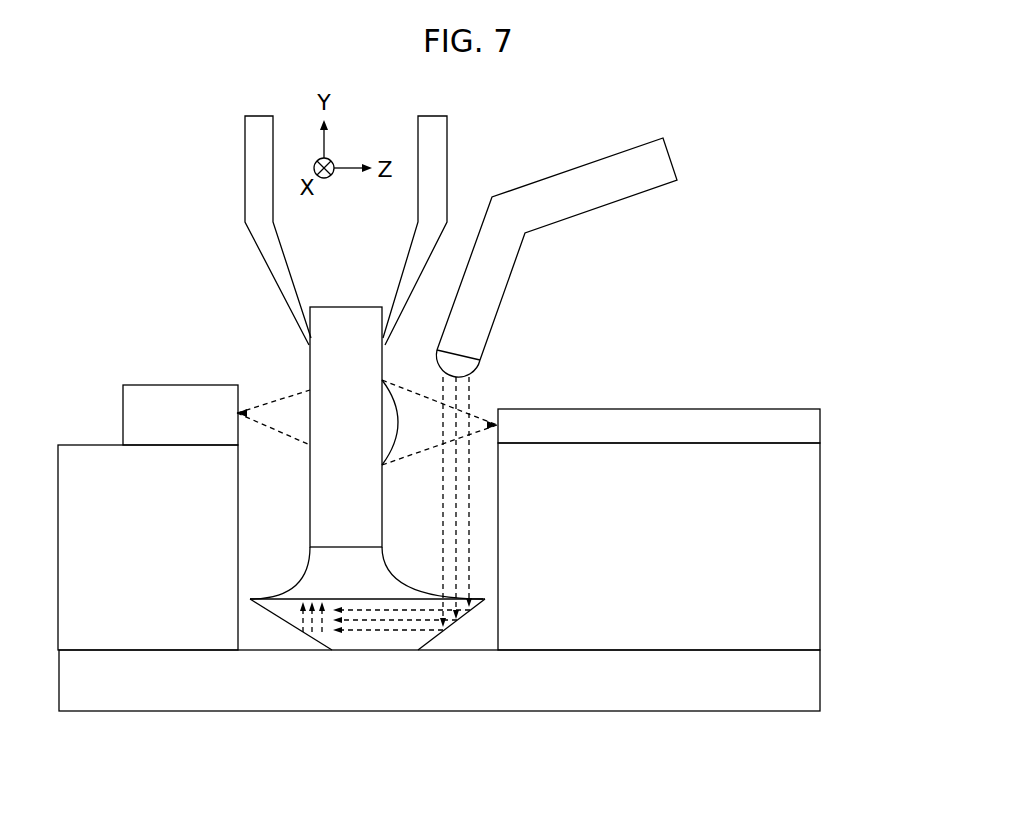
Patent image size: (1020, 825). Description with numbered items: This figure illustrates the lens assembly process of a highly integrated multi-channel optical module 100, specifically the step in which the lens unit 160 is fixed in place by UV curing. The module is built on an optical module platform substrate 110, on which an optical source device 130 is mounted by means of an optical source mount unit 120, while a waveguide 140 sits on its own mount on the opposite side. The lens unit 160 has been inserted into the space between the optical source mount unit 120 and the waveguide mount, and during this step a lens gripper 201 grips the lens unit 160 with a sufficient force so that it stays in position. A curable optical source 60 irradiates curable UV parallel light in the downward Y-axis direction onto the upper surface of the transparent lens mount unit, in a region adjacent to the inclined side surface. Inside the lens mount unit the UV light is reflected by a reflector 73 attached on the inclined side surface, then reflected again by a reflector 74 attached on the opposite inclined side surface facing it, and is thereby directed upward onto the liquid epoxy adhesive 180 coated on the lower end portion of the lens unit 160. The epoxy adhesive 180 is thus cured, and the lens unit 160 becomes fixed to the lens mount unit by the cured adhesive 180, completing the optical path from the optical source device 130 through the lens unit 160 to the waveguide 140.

The curable optical source 60 is at (620, 202).
The optical module 100 is at (135, 230).
The lens gripper 201 is at (243, 152).
The lens unit 160 is at (345, 307).
The adhesive 180 is at (293, 583).
The reflector 74 is at (297, 628).
The reflector 73 is at (452, 627).
The optical source mount unit 120 is at (153, 385).
The optical source device 130 is at (90, 443).
The waveguide 140 is at (658, 408).
The optical module platform substrate 110 is at (430, 712).